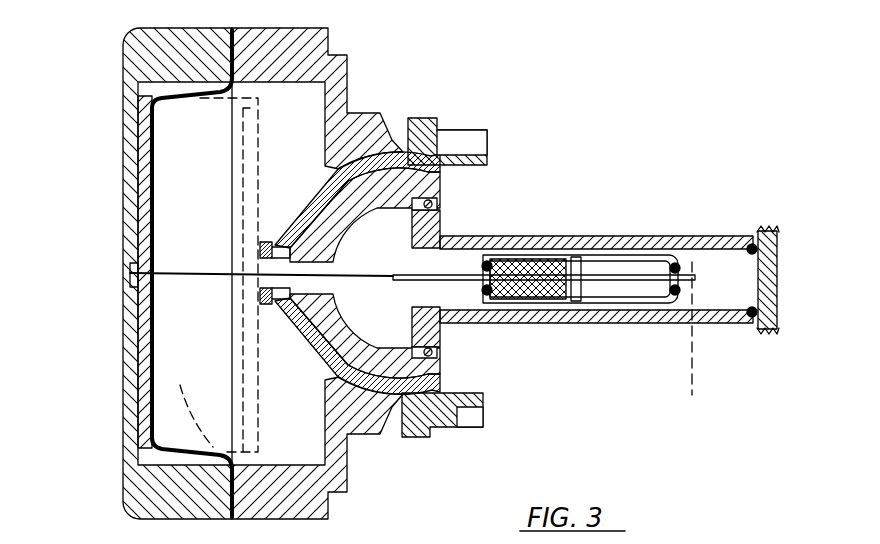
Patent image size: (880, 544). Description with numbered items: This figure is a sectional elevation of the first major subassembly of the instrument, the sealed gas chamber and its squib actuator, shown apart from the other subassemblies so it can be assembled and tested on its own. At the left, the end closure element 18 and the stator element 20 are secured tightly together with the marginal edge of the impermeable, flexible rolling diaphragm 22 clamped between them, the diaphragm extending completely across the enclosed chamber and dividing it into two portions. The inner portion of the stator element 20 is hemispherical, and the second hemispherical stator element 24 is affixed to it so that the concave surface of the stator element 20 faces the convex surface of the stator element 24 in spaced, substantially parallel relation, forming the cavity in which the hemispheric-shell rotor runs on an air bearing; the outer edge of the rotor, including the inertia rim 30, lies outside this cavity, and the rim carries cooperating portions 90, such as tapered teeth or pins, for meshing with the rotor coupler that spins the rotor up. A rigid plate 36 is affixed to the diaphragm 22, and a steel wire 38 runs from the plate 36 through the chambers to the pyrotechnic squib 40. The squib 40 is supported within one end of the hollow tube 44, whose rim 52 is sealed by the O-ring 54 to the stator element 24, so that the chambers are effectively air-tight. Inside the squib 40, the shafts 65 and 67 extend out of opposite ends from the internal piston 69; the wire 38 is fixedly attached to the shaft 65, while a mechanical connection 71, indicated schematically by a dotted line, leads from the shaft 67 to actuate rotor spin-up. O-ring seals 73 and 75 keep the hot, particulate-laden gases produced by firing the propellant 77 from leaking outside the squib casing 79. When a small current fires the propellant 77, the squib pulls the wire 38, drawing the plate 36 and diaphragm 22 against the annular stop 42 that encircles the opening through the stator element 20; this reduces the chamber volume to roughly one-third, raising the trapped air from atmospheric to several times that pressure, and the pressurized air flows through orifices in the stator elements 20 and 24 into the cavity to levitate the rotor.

The end closure element 18 is at (135, 521).
The stator element 20 is at (348, 413).
The diaphragm 22 is at (157, 440).
The second stator element 24 is at (405, 387).
The inertia rim 30 is at (437, 415).
The rigid plate 36 is at (135, 163).
The steel wire 38 is at (193, 268).
The pyrotechnic squib 40 is at (705, 270).
The annular stop 42 is at (258, 246).
The hollow tube 44 is at (525, 237).
The rim 52 is at (436, 205).
The O-ring 54 is at (433, 352).
The shaft 65 is at (397, 273).
The shaft 67 is at (612, 258).
The internal piston 69 is at (582, 295).
The mechanical connection 71 is at (695, 362).
The O-ring seal 73 is at (483, 268).
The O-ring seal 75 is at (678, 266).
The propellant 77 is at (552, 300).
The squib casing 79 is at (675, 294).
The cooperating portions 90 is at (475, 128).